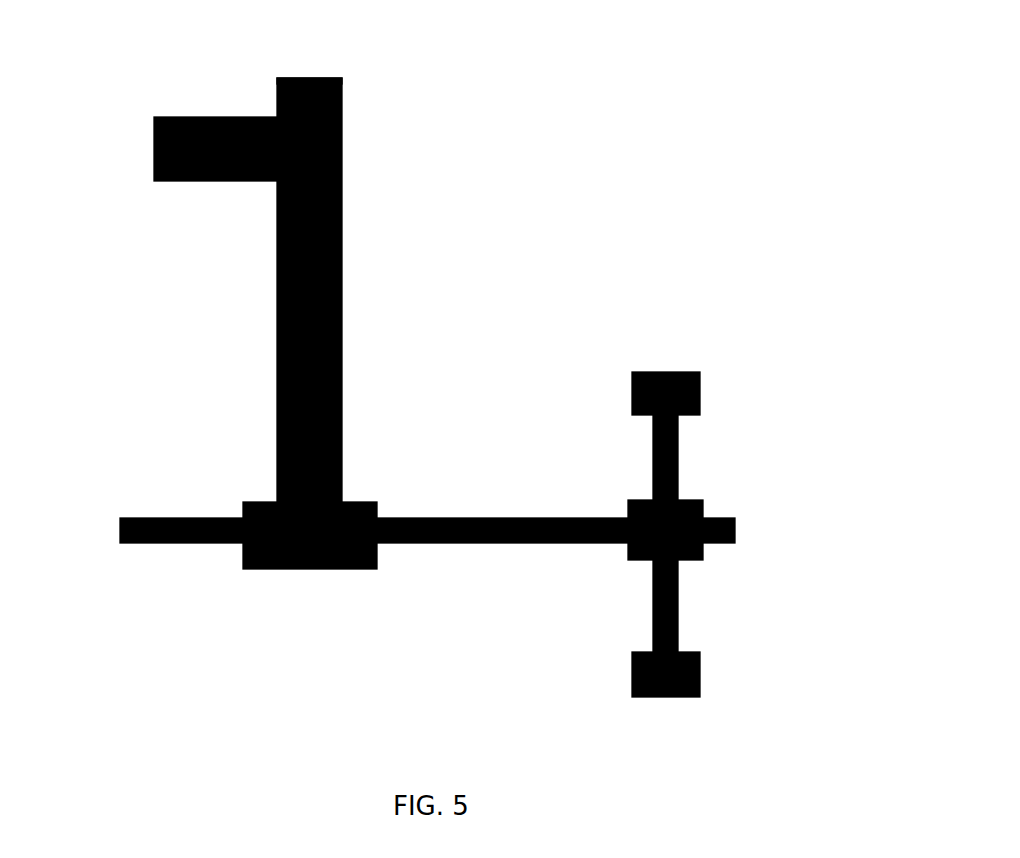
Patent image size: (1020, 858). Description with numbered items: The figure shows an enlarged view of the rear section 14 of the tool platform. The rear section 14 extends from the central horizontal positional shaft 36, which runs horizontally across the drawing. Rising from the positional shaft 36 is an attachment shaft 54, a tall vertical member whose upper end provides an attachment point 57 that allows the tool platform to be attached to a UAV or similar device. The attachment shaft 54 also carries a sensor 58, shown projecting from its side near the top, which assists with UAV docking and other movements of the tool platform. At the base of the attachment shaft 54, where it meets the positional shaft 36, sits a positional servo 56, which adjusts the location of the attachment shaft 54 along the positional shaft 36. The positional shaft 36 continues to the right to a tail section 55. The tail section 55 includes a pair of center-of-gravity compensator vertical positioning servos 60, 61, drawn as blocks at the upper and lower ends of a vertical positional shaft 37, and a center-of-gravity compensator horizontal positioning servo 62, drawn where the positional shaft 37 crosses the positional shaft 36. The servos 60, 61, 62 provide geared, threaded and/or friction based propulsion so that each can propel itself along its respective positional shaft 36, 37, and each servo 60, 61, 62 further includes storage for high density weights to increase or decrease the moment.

The rear section 14 is at (667, 70).
The central horizontal positional shaft 36 is at (170, 527).
The positional shaft 37 is at (665, 452).
The attachment shaft 54 is at (342, 258).
The tail section 55 is at (752, 446).
The positional servo 56 is at (293, 569).
The attachment point 57 is at (320, 78).
The sensor 58 is at (187, 147).
The COG compensator vertical positioning servo 60 is at (673, 370).
The COG compensator vertical positioning servo 61 is at (698, 652).
The COG compensator horizontal positioning servo 62 is at (703, 503).